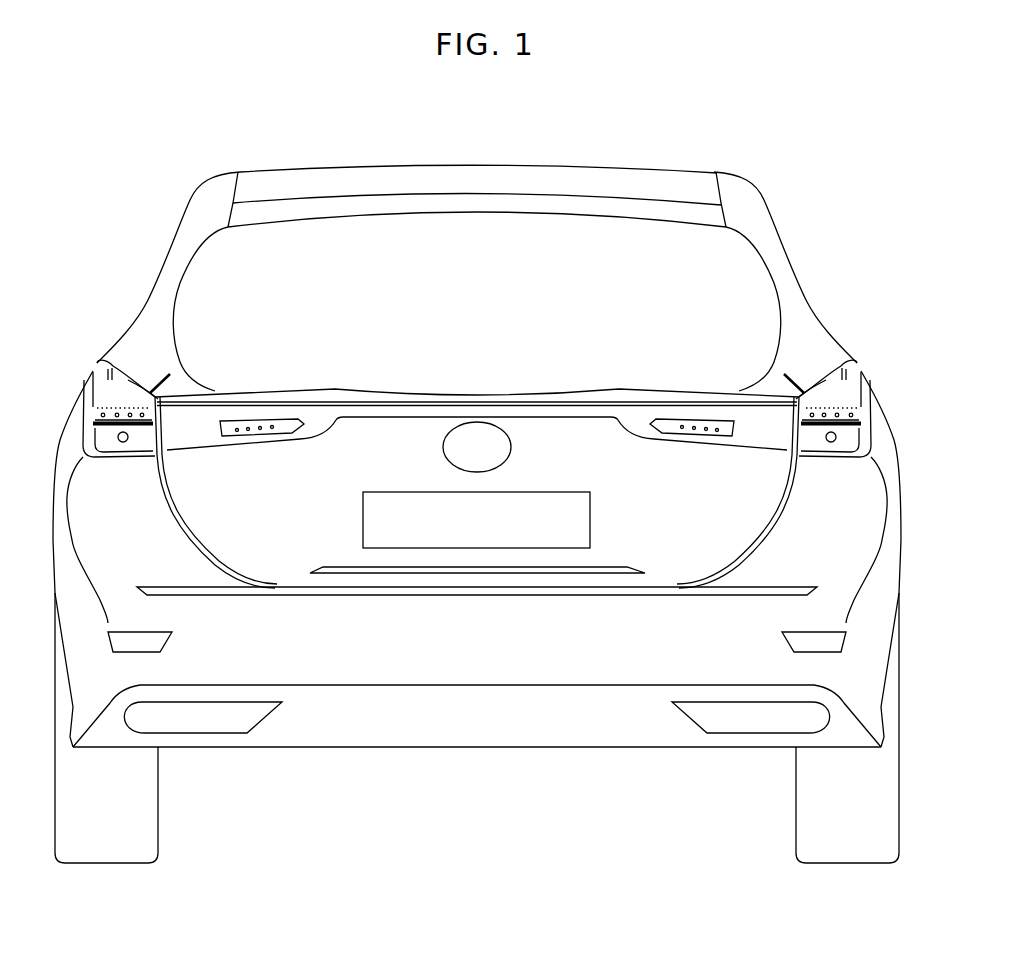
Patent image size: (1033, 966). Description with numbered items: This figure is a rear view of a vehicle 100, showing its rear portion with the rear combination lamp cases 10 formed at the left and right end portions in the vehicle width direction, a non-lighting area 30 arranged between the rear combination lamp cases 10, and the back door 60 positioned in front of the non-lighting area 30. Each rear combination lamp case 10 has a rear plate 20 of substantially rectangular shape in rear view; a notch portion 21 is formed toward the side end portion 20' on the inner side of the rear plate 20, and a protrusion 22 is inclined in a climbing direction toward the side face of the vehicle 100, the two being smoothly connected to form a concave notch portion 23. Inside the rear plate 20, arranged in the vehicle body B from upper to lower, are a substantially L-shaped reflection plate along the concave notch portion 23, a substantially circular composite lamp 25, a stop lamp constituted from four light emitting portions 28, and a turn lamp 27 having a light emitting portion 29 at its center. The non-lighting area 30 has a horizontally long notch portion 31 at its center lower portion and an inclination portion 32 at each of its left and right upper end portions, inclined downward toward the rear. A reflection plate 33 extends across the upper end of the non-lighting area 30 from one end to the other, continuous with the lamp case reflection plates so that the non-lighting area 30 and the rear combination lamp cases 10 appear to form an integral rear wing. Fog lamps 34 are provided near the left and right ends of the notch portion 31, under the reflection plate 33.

The vehicle 100 is at (120, 163).
The rear combination lamp case 10 is at (88, 352).
The rear plate 20 is at (477, 435).
The side end portion 20' is at (477, 377).
The notch portion 21 is at (143, 390).
The protrusion 22 is at (123, 380).
The concave notch portion 23 is at (477, 351).
The composite lamp 25 is at (162, 409).
The turn lamp 27 is at (124, 440).
The light emitting portion 28 is at (123, 414).
The light emitting portion 29 is at (123, 437).
The non-lighting area 30 is at (455, 388).
The notch portion 31 is at (418, 431).
The inclination portion 32 is at (263, 395).
The reflection plate 33 is at (623, 405).
The fog lamp 34 is at (253, 433).
The back door 60 is at (748, 542).
The vehicle body B is at (885, 660).